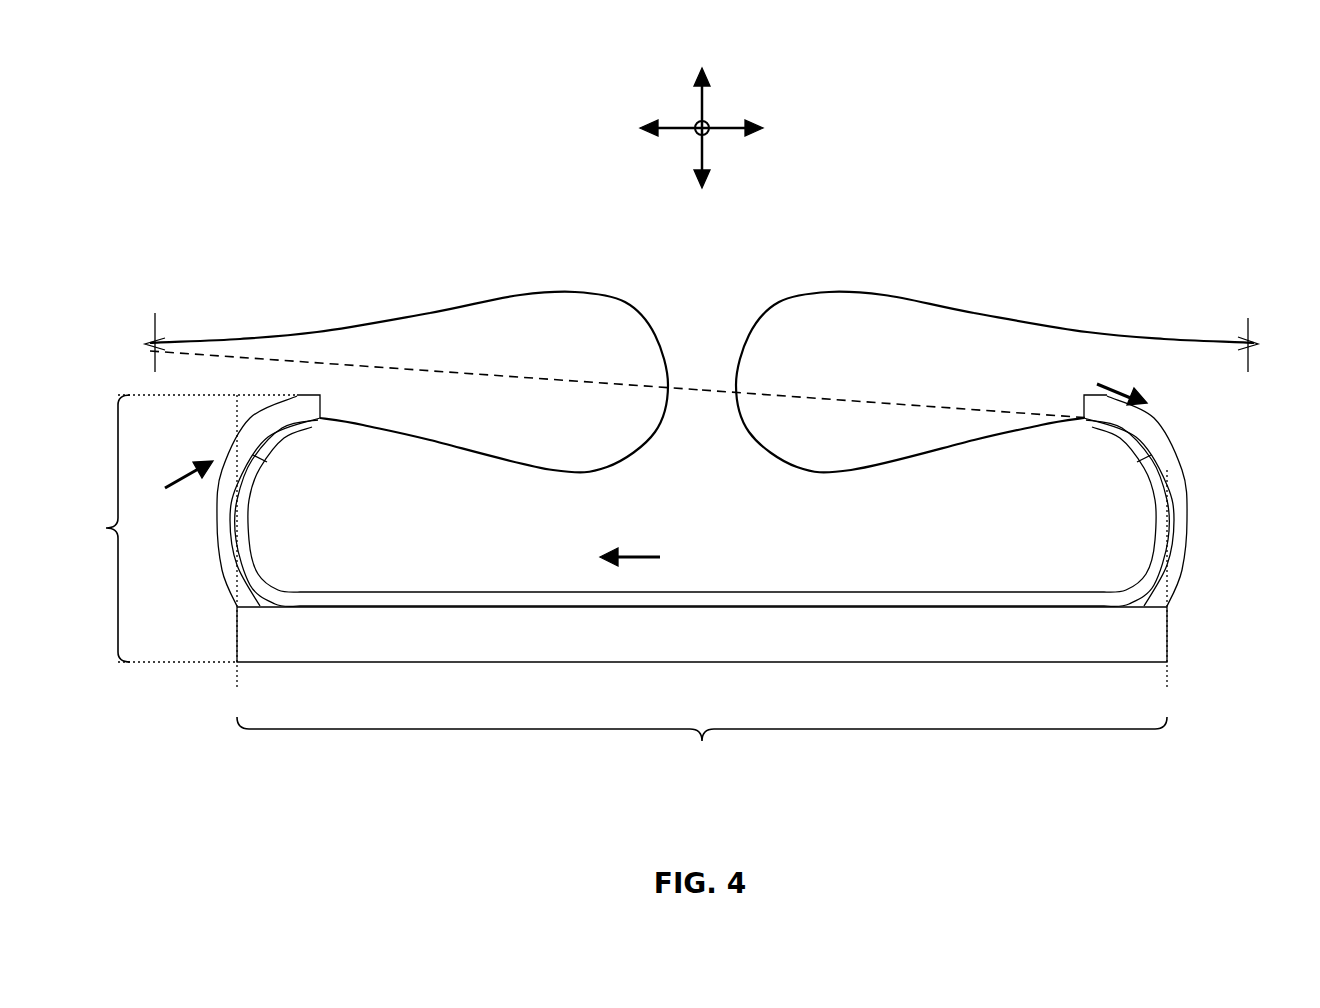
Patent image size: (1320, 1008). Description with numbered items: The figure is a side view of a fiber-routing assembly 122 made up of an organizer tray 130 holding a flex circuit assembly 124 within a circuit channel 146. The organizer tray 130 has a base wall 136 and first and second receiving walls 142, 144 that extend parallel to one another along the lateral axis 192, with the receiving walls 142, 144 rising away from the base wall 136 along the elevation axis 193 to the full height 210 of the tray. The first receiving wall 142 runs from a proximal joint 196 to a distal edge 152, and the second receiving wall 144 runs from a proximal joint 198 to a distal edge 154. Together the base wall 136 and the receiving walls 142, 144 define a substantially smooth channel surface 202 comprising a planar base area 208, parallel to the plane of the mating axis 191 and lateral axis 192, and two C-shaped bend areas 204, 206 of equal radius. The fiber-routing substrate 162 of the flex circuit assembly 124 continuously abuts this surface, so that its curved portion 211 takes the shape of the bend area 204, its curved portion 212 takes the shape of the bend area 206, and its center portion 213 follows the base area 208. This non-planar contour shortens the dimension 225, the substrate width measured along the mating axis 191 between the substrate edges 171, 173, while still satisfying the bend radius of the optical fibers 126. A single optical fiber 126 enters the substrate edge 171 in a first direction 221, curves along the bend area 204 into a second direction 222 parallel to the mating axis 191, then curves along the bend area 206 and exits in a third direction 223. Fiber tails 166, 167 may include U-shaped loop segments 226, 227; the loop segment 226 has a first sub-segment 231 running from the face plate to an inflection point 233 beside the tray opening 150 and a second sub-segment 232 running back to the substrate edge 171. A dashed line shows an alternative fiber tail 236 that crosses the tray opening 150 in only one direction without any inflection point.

The fiber-routing assembly 122 is at (1101, 203).
The flex circuit assembly 124 is at (848, 262).
The optical fibers 126 is at (320, 330).
The organizer tray 130 is at (1208, 452).
The base wall 136 is at (498, 646).
The first receiving wall 142 is at (1176, 536).
The second receiving wall 144 is at (227, 527).
The circuit channel 146 is at (771, 510).
The tray opening 150 is at (592, 376).
The distal edge 152 is at (1084, 410).
The distal edge 154 is at (321, 410).
The fiber-routing substrate 162 is at (536, 591).
The fiber tail 166 is at (806, 292).
The fiber tail 167 is at (515, 296).
The substrate edge 171 is at (1142, 450).
The substrate edge 173 is at (261, 455).
The mating axis 191 is at (718, 130).
The lateral axis 192 is at (695, 131).
The elevation axis 193 is at (703, 100).
The proximal joint 196 is at (1139, 595).
The proximal joint 198 is at (269, 594).
The channel surface 202 is at (433, 598).
The bend area 204 is at (1119, 440).
The bend area 206 is at (285, 440).
The base area 208 is at (923, 598).
The height 210 is at (608, 542).
The curved portion 211 is at (1150, 487).
The curved portion 212 is at (253, 530).
The center portion 213 is at (681, 591).
The first direction 221 is at (1123, 392).
The second direction 222 is at (628, 553).
The third direction 223 is at (197, 469).
The dimension 225 is at (702, 745).
The loop segment 226 is at (923, 277).
The loop segment 227 is at (447, 303).
The first sub-segment 231 is at (1030, 322).
The second sub-segment 232 is at (890, 470).
The inflection point 233 is at (734, 380).
The fiber tail 236 is at (510, 376).